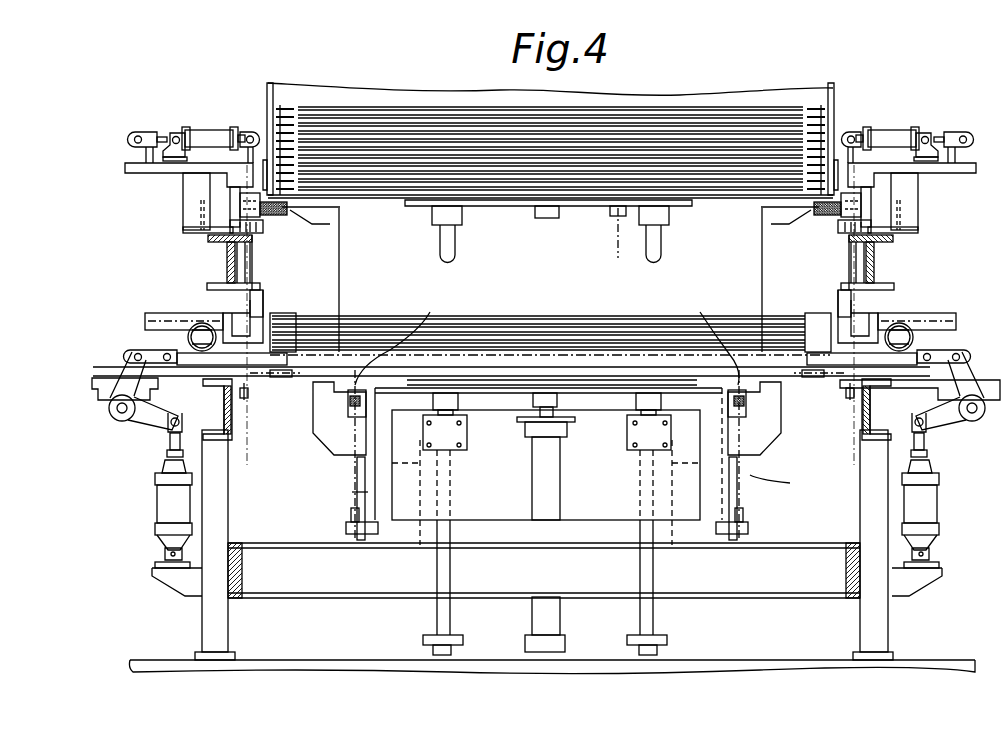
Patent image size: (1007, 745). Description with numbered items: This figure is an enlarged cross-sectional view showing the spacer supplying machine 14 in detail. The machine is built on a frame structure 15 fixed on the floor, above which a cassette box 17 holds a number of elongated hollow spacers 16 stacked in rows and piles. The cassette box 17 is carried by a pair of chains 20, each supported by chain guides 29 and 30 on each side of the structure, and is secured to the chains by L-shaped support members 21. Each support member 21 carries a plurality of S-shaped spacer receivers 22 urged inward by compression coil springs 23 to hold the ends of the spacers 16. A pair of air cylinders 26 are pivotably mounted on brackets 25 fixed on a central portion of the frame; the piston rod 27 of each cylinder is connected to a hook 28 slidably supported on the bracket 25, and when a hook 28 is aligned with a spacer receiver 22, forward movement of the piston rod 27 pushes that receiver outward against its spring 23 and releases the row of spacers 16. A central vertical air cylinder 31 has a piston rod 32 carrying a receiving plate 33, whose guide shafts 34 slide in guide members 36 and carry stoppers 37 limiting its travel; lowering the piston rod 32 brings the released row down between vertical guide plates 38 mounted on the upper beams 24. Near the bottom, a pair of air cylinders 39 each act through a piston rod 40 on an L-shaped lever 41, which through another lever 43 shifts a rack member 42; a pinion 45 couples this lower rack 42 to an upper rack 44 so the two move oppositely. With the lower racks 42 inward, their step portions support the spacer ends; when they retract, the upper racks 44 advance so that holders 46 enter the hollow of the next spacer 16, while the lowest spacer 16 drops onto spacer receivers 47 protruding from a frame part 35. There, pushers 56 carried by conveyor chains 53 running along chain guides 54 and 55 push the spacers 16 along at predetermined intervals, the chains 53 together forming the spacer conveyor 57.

The spacer supplying machine 14 is at (224, 73).
The frame structure 15 is at (333, 613).
The spacers 16 is at (690, 105).
The cassette box 17 is at (836, 98).
The chains 20 is at (252, 300).
The support members 21 is at (263, 160).
The spacer receivers 22 is at (336, 208).
The compression coil springs 23 is at (300, 215).
The upper beams 24 is at (225, 261).
The brackets 25 is at (185, 215).
The air cylinders 26 is at (206, 130).
The piston rod 27 is at (157, 130).
The hook 28 is at (155, 170).
The chain guide 29 is at (262, 226).
The chain guide 30 is at (244, 400).
The central vertical air cylinder 31 is at (532, 474).
The piston rod 32 is at (560, 220).
The receiving plate 33 is at (620, 245).
The guide shafts 34 is at (457, 238).
The frame part 35 is at (357, 500).
The guide members 36 is at (462, 430).
The stoppers 37 is at (463, 640).
The vertical guide plates 38 is at (342, 306).
The air cylinders 39 is at (157, 495).
The piston rod 40 is at (170, 450).
The L-shaped lever 41 is at (126, 423).
The rack member 42 is at (282, 378).
The lever 43 is at (130, 356).
The upper rack 44 is at (150, 313).
The pinion 45 is at (192, 334).
The holders 46 is at (245, 320).
The spacer receivers 47 is at (350, 452).
The conveyor chains 53 is at (355, 470).
The chain guide 54 is at (346, 396).
The chain guide 55 is at (347, 525).
The pushers 56 is at (547, 337).
The spacer conveyor 57 is at (758, 477).